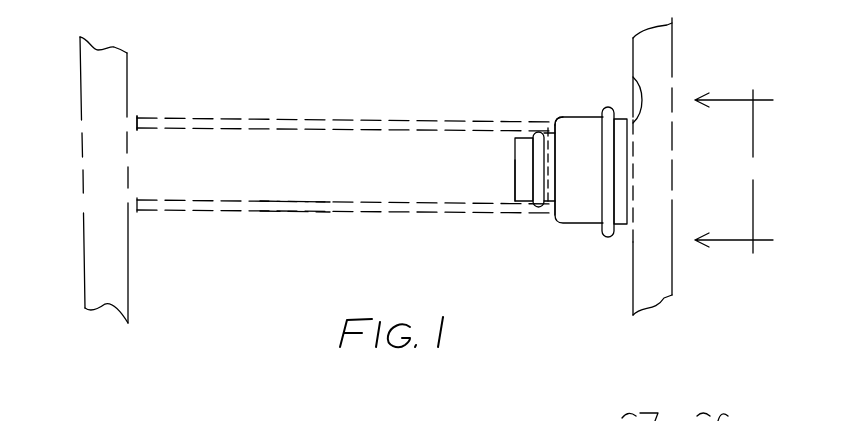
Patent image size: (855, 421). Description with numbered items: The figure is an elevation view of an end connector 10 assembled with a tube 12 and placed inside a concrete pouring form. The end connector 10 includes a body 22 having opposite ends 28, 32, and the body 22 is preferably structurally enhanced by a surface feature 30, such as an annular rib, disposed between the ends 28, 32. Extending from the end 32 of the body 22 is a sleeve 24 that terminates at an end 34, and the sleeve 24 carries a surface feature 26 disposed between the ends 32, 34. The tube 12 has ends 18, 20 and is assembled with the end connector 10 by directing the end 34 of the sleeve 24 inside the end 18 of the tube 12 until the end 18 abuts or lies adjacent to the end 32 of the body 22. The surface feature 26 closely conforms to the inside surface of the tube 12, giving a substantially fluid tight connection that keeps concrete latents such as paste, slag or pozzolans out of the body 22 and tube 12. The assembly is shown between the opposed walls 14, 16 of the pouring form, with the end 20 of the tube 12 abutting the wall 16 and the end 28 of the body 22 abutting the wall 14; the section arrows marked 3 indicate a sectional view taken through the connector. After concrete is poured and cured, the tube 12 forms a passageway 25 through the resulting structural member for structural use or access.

The end connector 10 is at (572, 225).
The tube 12 is at (368, 120).
The wall 14 is at (673, 50).
The wall 16 is at (128, 77).
The end 18 is at (553, 120).
The end 20 is at (137, 118).
The body 22 is at (593, 228).
The sleeve 24 is at (513, 192).
The passageway 25 is at (307, 180).
The surface feature 26 is at (537, 206).
The end 28 is at (633, 77).
The surface feature 30 is at (608, 108).
The end 32 is at (556, 133).
The end 34 is at (514, 168).
The section line 3- 3 is at (729, 176).